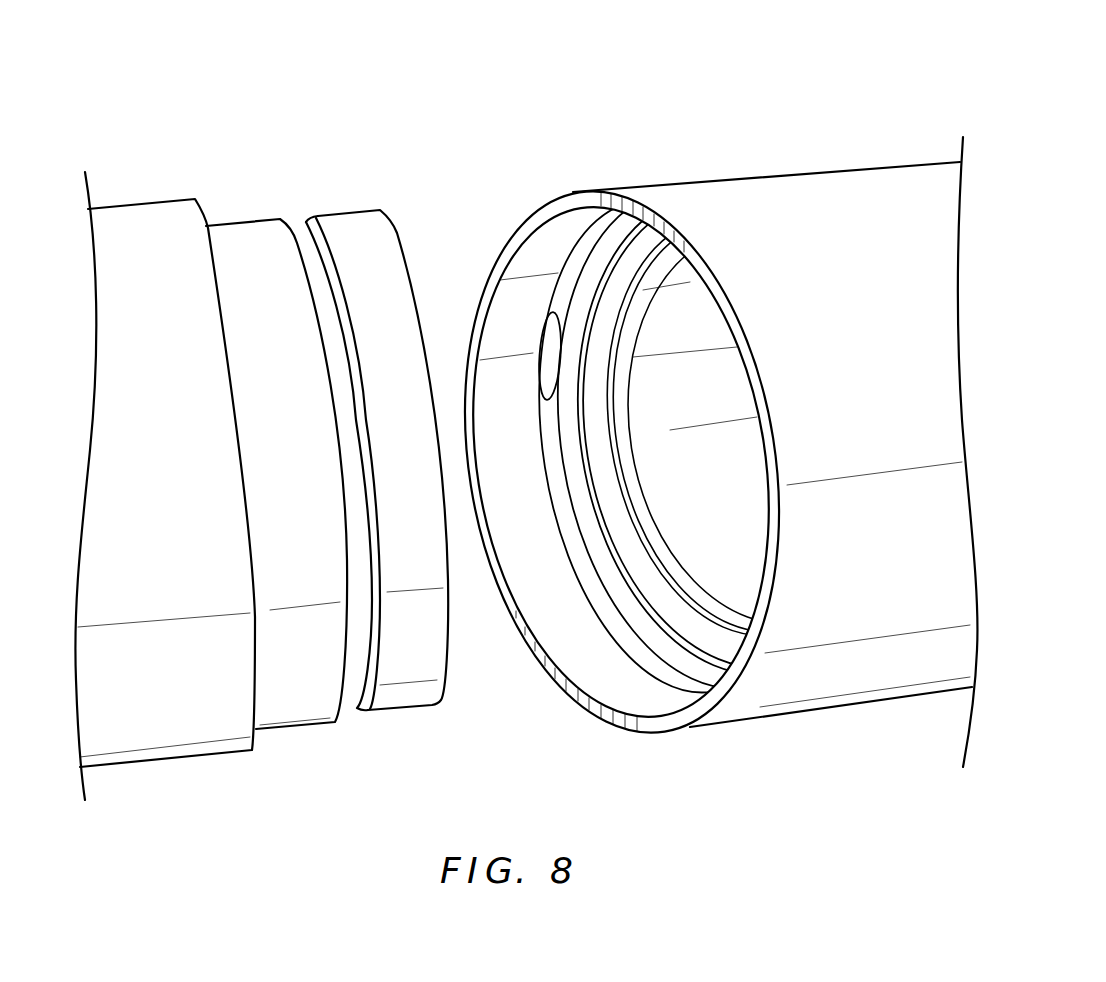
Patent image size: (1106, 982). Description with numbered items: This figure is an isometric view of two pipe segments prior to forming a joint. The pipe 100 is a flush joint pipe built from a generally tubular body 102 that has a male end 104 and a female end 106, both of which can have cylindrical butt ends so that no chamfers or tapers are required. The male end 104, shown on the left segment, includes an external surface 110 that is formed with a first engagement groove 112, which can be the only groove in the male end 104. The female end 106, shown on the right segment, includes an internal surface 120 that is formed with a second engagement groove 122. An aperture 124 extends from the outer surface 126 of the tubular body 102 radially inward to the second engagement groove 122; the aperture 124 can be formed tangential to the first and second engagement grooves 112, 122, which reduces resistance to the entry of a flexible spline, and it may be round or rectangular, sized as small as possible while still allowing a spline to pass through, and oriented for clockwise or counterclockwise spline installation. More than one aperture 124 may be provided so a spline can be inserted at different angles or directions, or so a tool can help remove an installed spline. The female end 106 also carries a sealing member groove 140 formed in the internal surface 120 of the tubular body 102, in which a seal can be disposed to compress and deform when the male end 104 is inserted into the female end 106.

The pipe 100 is at (402, 99).
The tubular body 102 is at (137, 214).
The male end 104 is at (248, 201).
The female end 106 is at (564, 190).
The external surface 110 is at (362, 216).
The first engagement groove 112 is at (299, 226).
The internal surface 120 is at (570, 657).
The second engagement groove 122 is at (547, 416).
The aperture 124 is at (550, 336).
The outer surface 126 is at (673, 205).
The sealing member groove 140 is at (673, 645).